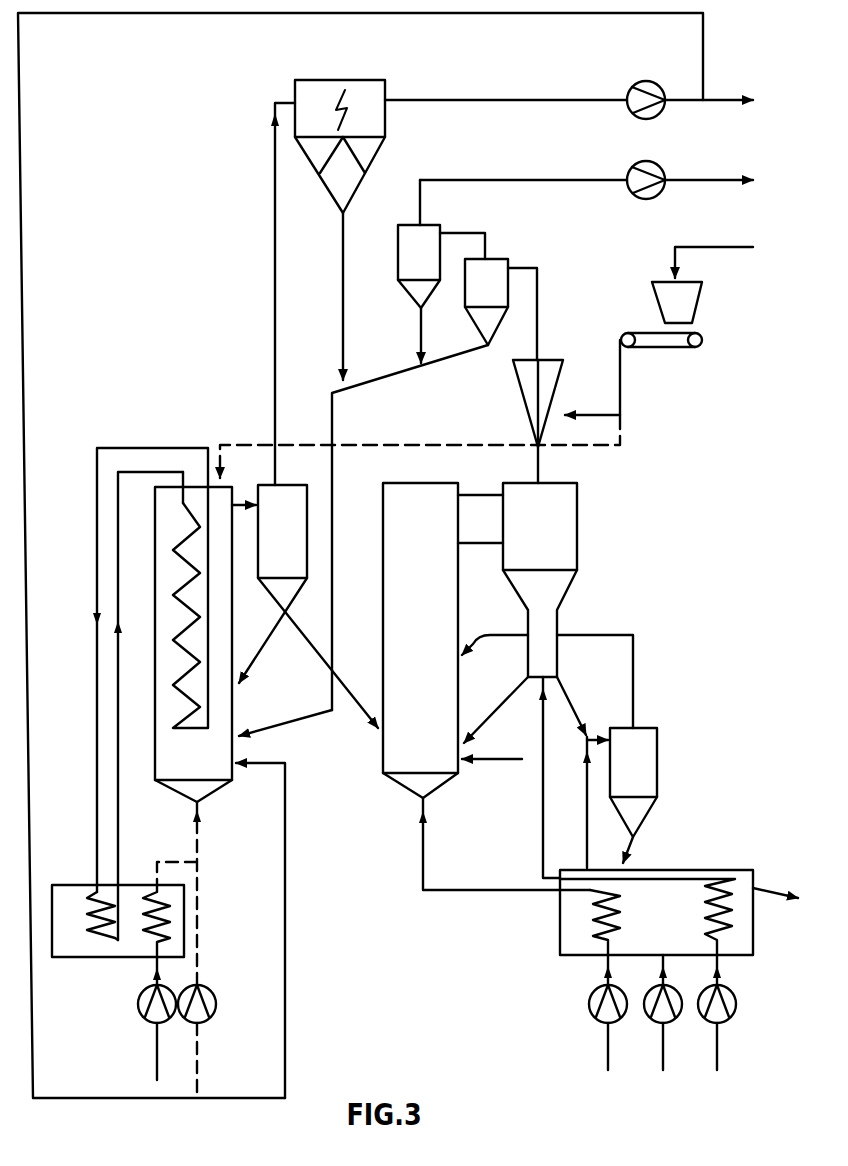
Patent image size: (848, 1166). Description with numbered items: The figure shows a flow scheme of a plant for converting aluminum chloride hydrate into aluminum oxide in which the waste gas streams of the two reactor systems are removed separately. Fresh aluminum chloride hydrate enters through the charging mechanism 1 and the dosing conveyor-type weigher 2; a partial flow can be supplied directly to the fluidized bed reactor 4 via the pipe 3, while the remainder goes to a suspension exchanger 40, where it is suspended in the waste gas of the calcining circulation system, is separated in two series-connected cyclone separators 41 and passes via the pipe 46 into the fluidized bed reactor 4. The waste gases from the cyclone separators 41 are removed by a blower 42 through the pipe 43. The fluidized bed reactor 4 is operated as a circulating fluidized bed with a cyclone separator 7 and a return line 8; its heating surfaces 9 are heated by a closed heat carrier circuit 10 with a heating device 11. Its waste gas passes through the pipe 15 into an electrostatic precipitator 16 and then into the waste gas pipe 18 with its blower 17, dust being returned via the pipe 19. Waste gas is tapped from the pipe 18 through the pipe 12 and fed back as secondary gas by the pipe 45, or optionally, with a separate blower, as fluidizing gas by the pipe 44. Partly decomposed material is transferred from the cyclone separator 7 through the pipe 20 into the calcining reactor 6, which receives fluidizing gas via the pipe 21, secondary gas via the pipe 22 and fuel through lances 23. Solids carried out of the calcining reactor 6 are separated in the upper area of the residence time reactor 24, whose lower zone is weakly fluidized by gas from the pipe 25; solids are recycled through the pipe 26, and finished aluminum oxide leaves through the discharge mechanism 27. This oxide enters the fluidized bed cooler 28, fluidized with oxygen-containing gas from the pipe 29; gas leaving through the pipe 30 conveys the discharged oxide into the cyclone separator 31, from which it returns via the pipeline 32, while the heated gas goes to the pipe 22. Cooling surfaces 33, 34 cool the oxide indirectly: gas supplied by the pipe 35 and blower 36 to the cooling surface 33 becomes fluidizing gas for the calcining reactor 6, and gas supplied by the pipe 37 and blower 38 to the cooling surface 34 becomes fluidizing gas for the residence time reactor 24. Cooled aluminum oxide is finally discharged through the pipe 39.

The charging mechanism 1 is at (702, 305).
The dosing conveyor-type weigher 2 is at (658, 345).
The pipe 3 is at (382, 445).
The fluidized bed reactor 4 is at (158, 740).
The calcining reactor 6 is at (383, 632).
The cyclone separator 7 is at (290, 485).
The return line 8 is at (262, 647).
The heating surfaces 9 is at (187, 622).
The heat carrier circuit 10 is at (118, 697).
The heating device 11 is at (80, 957).
The pipe 12 is at (31, 312).
The pipe 15 is at (275, 264).
The electrostatic precipitator 16 is at (385, 124).
The blower 17 is at (636, 115).
The waste gas pipe 18 is at (704, 103).
The pipe 19 is at (343, 268).
The pipe 20 is at (317, 650).
The pipe 21 is at (423, 863).
The pipe 22 is at (633, 660).
The lances 23 is at (495, 760).
The residence time reactor 24 is at (577, 520).
The pipe 25 is at (543, 800).
The pipe 26 is at (497, 710).
The discharge mechanism 27 is at (575, 708).
The fluidized bed cooler 28 is at (558, 938).
The pipe 29 is at (663, 1045).
The pipe 30 is at (587, 798).
The cyclone separator 31 is at (657, 750).
The pipeline 32 is at (645, 846).
The cooling surface 33 is at (596, 897).
The cooling surface 34 is at (707, 890).
The pipe 35 is at (608, 1045).
The blower 36 is at (589, 1003).
The pipe 37 is at (720, 1047).
The blower 38 is at (728, 988).
The pipe 39 is at (775, 886).
The suspension exchanger 40 is at (522, 398).
The cyclone separators 41 is at (490, 259).
The blower 42 is at (636, 196).
The pipe 43 is at (701, 182).
The pipe 44 is at (199, 892).
The pipe 45 is at (283, 893).
The pipe 46 is at (322, 713).